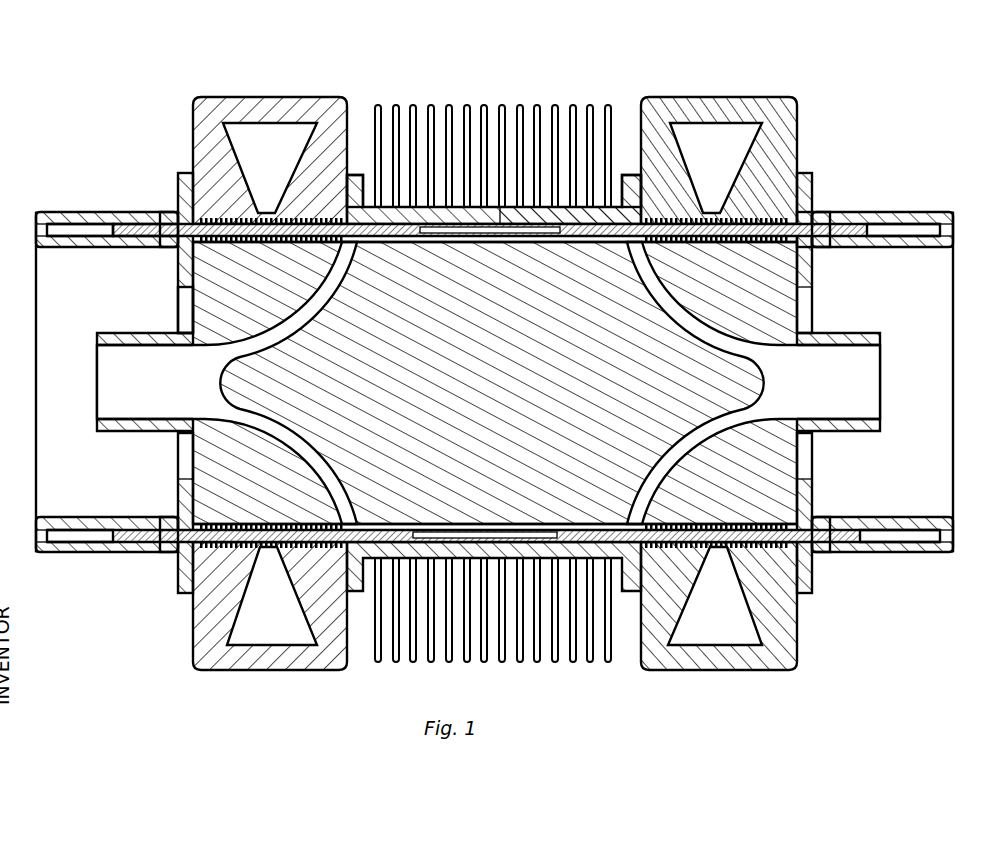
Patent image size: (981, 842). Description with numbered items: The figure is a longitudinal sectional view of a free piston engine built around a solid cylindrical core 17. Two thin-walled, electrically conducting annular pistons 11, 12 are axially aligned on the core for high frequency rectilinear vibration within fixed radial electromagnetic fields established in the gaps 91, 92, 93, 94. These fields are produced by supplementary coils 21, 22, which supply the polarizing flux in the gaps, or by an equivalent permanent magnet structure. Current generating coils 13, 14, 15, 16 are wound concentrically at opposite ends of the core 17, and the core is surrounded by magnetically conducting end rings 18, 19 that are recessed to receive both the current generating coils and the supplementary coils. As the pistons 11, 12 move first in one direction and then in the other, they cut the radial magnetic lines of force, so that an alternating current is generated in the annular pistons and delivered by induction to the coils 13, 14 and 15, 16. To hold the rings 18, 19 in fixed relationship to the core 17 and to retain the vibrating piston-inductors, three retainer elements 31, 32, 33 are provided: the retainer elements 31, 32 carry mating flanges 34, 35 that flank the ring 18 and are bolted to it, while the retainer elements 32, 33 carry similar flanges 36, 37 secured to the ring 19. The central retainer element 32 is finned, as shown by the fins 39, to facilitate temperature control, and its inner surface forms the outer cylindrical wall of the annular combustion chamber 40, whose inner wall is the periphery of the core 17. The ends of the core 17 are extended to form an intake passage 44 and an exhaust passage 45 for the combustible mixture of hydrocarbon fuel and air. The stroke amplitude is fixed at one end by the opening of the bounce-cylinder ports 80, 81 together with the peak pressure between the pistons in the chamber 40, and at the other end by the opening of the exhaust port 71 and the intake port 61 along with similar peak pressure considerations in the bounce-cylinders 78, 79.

The annular piston 11 is at (178, 248).
The annular piston 12 is at (812, 520).
The current generating coil 13 is at (262, 222).
The current generating coil 14 is at (245, 245).
The current generating coil 15 is at (712, 222).
The current generating coil 16 is at (700, 244).
The solid cylindrical core 17 is at (510, 389).
The end ring 18 is at (205, 97).
The end ring 19 is at (665, 97).
The supplementary coil 21 is at (277, 159).
The supplementary coil 22 is at (724, 159).
The retainer element 31 is at (46, 250).
The central retainer element 32 is at (420, 238).
The retainer element 33 is at (880, 213).
The flange 34 is at (178, 182).
The flange 35 is at (368, 182).
The flange 36 is at (612, 172).
The flange 37 is at (812, 182).
The fins 39 is at (448, 112).
The annular combustion chamber 40 is at (468, 528).
The intake passage 44 is at (838, 389).
The exhaust passage 45 is at (160, 389).
The intake port 61 is at (620, 250).
The exhaust port 71 is at (352, 248).
The bounce-cylinder 78 is at (62, 222).
The bounce-cylinder 79 is at (900, 236).
The bounce-cylinder port 80 is at (170, 222).
The bounce-cylinder port 81 is at (818, 250).
The gap 91 is at (182, 279).
The gap 92 is at (377, 157).
The gap 93 is at (805, 222).
The gap 94 is at (610, 178).